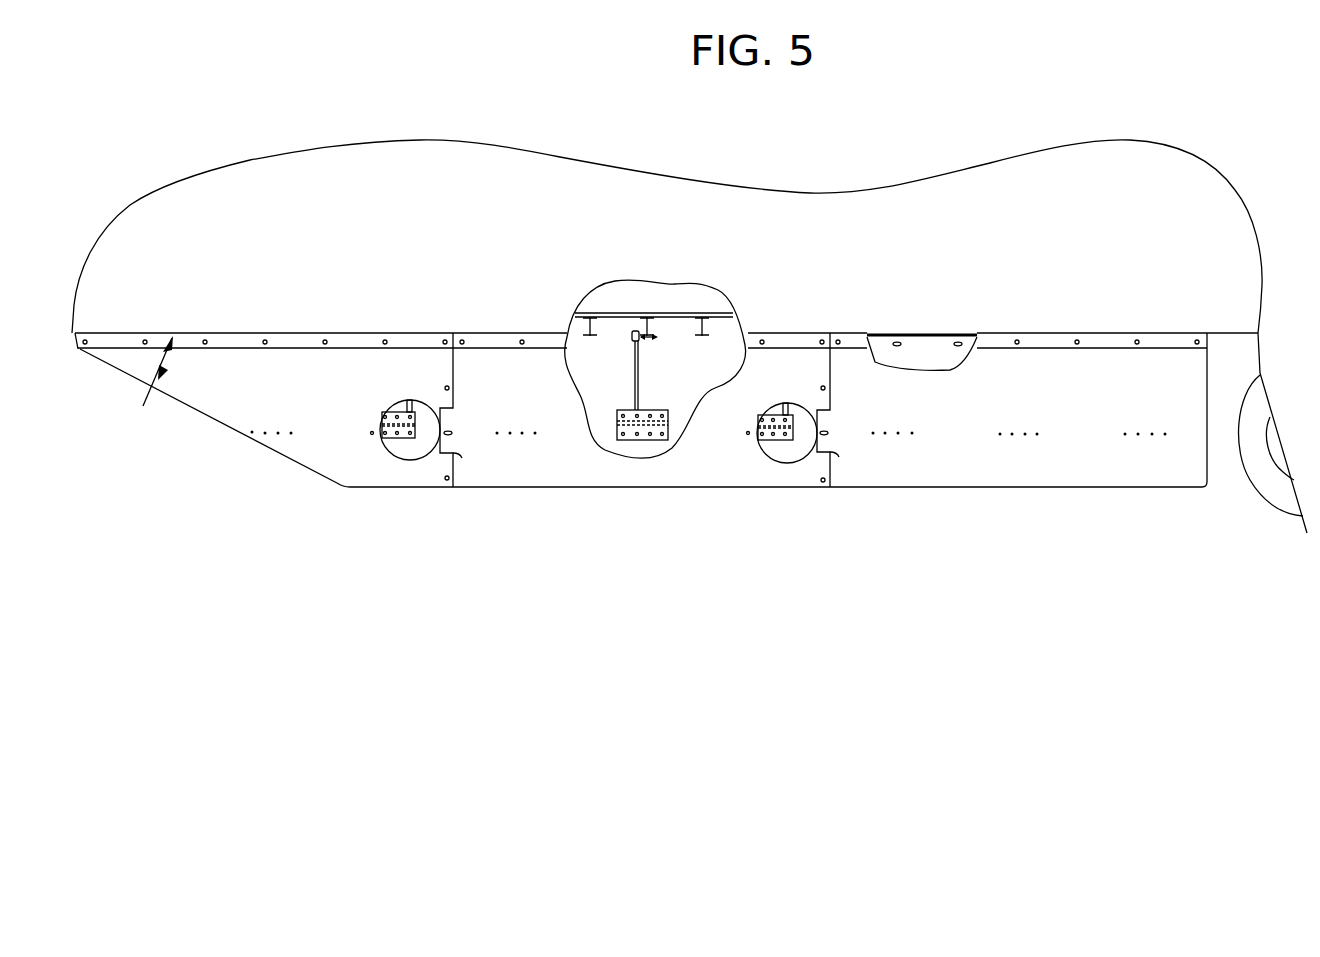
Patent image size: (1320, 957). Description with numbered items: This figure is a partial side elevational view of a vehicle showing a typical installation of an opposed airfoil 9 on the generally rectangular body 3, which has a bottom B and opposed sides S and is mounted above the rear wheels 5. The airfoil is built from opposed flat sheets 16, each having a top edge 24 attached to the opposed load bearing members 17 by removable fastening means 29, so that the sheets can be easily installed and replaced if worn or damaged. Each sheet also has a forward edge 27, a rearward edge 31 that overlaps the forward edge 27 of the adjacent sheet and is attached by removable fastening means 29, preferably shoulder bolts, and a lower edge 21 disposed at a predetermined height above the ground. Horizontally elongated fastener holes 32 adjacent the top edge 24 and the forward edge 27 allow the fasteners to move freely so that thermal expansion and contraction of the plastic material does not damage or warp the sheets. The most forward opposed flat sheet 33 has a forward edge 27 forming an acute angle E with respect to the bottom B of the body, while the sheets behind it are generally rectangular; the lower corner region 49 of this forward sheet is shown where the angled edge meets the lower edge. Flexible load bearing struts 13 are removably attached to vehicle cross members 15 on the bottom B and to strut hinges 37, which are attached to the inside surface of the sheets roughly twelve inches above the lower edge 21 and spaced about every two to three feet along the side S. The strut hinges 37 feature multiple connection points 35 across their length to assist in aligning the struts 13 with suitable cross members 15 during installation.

The rectangular body 3 is at (240, 205).
The rear wheels 5 is at (1263, 493).
The opposed airfoil 9 is at (442, 243).
The flexible load bearing struts 13 is at (637, 373).
The vehicle cross members 15 is at (655, 337).
The opposed flat sheets 16 is at (633, 487).
The load bearing members 17 is at (300, 333).
The lower edge 21 is at (1085, 487).
The top edge 24 is at (300, 350).
The forward edge 27 is at (440, 448).
The removable fastening means 29 is at (205, 341).
The rearward edge 31 is at (453, 470).
The horizontally elongated fastener holes 32 is at (453, 433).
The most forward opposed flat sheet 33 is at (228, 433).
The connection points 35 is at (662, 413).
The strut hinges 37 is at (397, 443).
The deck corner 49 is at (308, 470).
The bottom B is at (1090, 333).
The side S is at (1105, 243).
The acute angle E is at (151, 386).